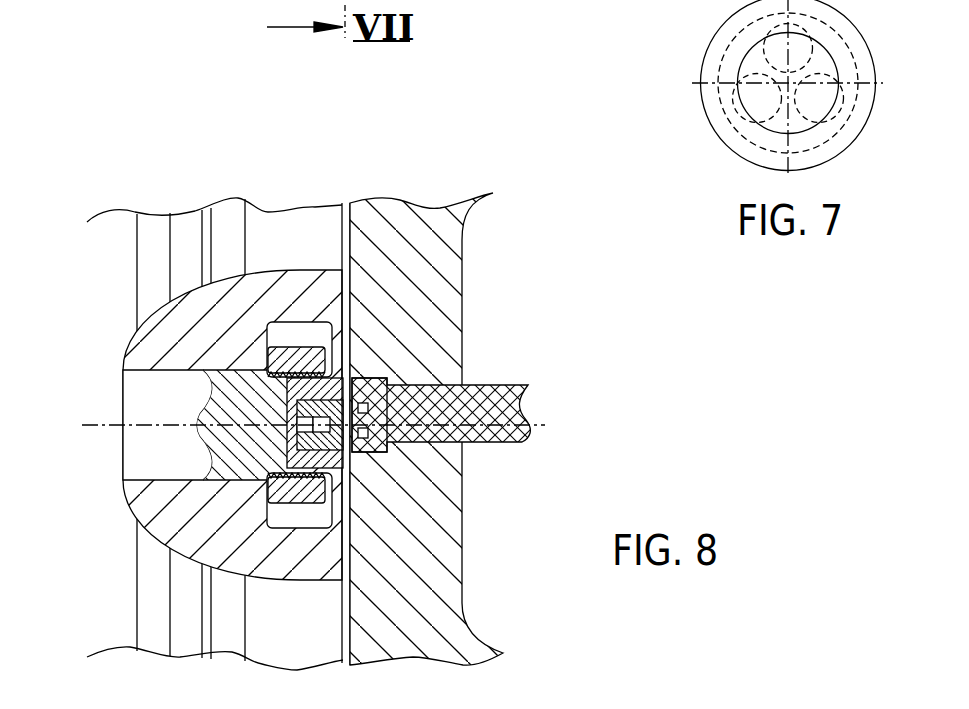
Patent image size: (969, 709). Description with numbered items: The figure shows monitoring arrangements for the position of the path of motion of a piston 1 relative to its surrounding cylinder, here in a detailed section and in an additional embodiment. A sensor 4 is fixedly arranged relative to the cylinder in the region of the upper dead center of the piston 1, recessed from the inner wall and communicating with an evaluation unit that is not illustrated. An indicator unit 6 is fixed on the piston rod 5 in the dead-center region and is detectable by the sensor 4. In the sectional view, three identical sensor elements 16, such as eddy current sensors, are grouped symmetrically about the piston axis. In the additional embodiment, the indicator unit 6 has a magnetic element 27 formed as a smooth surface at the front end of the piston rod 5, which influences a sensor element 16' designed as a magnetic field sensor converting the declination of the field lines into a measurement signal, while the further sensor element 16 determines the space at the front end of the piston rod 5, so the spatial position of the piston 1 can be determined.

In FIG. 8, the piston 1 is at (302, 634).
In FIG. 8, the sensor 4 is at (425, 445).
In FIG. 8, the piston rod 5 is at (150, 400).
In FIG. 8, the indicator unit 6 is at (315, 363).
In FIG. 8, the sensor element 16 is at (444, 394).
In FIG. 7, the sensor element 16 is at (759, 86).
In FIG. 8, the sensor element 16' is at (447, 360).
In FIG. 8, the magnetic element 27 is at (352, 450).